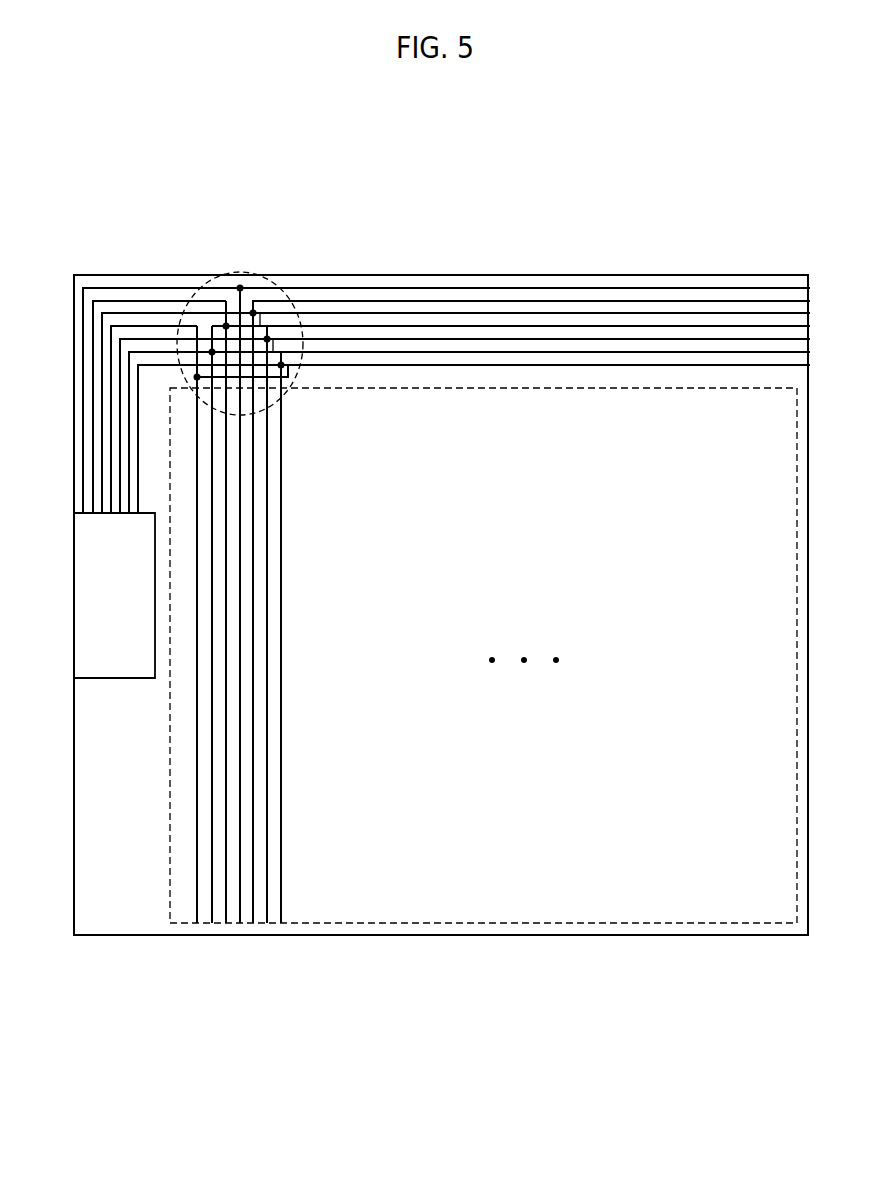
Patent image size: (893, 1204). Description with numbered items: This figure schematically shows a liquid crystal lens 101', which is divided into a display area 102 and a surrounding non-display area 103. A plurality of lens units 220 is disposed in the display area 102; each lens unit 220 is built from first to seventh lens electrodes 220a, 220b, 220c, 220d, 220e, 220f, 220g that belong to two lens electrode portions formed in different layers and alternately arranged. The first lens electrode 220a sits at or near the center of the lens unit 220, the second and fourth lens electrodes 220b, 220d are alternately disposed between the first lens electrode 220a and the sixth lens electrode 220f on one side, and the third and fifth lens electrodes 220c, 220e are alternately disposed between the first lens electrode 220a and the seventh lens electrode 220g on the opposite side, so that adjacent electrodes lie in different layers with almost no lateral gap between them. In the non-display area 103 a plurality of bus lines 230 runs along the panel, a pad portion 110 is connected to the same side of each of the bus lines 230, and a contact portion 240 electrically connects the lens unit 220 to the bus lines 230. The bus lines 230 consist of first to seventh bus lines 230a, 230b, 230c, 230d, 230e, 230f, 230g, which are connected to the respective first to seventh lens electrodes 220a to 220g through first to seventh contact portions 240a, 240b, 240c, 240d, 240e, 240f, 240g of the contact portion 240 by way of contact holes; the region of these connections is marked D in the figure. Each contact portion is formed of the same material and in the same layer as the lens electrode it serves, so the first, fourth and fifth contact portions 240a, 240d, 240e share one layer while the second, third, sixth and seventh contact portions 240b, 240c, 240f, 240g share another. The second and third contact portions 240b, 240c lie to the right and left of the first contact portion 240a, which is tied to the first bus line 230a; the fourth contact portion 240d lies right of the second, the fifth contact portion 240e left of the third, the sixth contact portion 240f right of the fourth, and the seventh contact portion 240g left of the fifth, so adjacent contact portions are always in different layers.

The liquid crystal lens 101' is at (486, 176).
The display area 102 is at (545, 910).
The non-display area 103 is at (74, 890).
The pad portion 110 is at (82, 602).
The connection region D is at (302, 378).
The lens unit 220 is at (143, 1002).
The first lens electrode 220a is at (240, 912).
The second lens electrode 220b is at (253, 912).
The third lens electrode 220c is at (226, 912).
The fourth lens electrode 220d is at (267, 912).
The fifth lens electrode 220e is at (212, 912).
The sixth lens electrode 220f is at (281, 912).
The seventh lens electrode 220g is at (197, 912).
The bus lines 230 is at (795, 214).
The first bus line 230a is at (563, 288).
The second bus line 230b is at (585, 301).
The third bus line 230c is at (620, 313).
The fourth bus line 230d is at (655, 326).
The fifth bus line 230e is at (692, 339).
The sixth bus line 230f is at (722, 352).
The seventh bus line 230g is at (757, 365).
The contact portion 240 is at (137, 210).
The first contact portion 240a is at (240, 284).
The second contact portion 240b is at (256, 310).
The third contact portion 240c is at (226, 323).
The fourth contact portion 240d is at (270, 337).
The fifth contact portion 240e is at (210, 349).
The sixth contact portion 240f is at (284, 362).
The seventh contact portion 240g is at (194, 375).